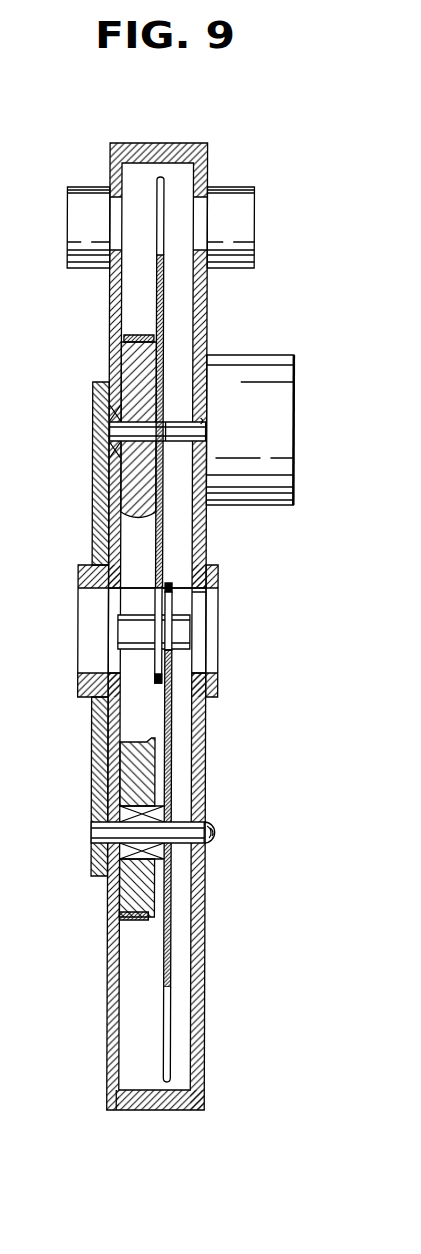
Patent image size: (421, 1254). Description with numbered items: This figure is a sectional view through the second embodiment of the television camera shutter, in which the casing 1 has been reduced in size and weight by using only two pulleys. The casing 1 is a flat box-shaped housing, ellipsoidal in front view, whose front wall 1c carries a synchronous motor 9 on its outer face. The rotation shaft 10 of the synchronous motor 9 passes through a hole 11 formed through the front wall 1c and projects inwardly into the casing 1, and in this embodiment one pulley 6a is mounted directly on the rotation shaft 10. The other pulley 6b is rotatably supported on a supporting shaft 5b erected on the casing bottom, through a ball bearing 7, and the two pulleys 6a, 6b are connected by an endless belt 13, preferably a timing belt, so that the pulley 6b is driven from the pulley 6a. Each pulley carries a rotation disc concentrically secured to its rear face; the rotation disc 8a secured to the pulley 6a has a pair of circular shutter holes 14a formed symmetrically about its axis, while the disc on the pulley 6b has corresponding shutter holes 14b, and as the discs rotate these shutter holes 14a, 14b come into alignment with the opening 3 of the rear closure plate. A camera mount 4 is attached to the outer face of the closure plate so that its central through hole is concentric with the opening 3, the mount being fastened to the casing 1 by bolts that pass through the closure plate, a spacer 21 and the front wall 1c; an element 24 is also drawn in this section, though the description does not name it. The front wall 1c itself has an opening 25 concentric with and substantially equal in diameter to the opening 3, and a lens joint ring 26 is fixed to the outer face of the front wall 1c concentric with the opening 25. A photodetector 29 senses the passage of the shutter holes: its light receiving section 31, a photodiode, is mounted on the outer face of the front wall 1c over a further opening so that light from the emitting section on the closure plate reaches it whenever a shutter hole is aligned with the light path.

The casing 1 is at (179, 343).
The front wall 1c is at (208, 170).
The opening 3 is at (110, 673).
The camera mount 4 is at (92, 455).
The supporting shaft 5b is at (218, 833).
The pulley 6a is at (132, 518).
The pulley 6b is at (140, 742).
The ball bearing 7 is at (108, 413).
The rotation disc 8a is at (165, 310).
The synchronous motor 9 is at (270, 355).
The rotation shaft 10 is at (173, 422).
The hole 11 is at (202, 420).
The belt 13 is at (140, 335).
The shutter hole 14a is at (153, 193).
The shutter hole 14b is at (173, 590).
The spacer 21 is at (147, 615).
The left guide block 24 is at (78, 578).
The opening 25 is at (200, 592).
The lens joint ring 26 is at (219, 578).
The photodetector 29 is at (230, 187).
The light receiving section 31 is at (83, 187).